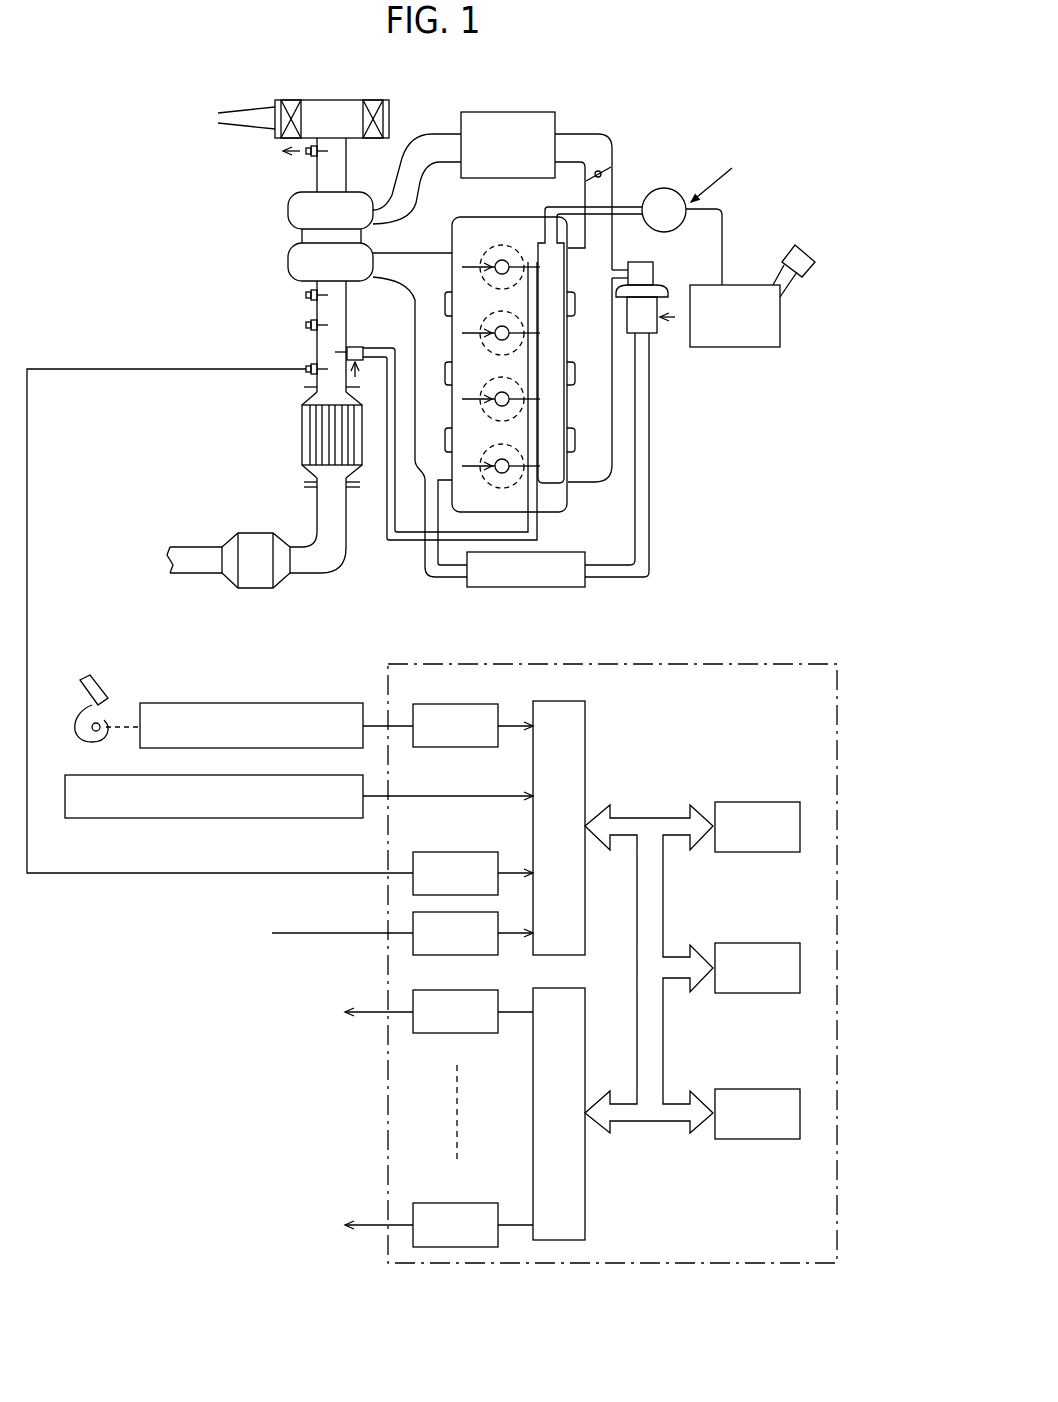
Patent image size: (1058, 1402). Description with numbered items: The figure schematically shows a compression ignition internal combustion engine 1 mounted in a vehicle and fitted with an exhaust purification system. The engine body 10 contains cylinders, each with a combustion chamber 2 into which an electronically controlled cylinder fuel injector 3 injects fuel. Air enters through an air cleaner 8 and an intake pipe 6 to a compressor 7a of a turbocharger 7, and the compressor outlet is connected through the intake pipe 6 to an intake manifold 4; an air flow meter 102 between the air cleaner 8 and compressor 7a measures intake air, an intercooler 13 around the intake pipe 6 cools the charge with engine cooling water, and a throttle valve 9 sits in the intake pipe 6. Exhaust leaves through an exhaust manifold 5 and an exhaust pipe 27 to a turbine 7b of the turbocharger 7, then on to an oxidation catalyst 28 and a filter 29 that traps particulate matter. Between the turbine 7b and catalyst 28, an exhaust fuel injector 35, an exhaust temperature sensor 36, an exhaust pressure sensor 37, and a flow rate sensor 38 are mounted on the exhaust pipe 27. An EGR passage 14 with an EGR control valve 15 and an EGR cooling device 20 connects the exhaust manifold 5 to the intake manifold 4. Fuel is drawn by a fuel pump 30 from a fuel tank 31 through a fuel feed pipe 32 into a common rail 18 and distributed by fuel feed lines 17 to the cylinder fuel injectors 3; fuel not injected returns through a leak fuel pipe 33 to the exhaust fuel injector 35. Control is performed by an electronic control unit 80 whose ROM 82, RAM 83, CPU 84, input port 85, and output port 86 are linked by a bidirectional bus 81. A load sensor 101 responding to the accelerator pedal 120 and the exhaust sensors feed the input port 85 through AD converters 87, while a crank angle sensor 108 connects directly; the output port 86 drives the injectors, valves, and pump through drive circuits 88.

The internal combustion engine 1 is at (714, 102).
The combustion chamber 2 is at (483, 247).
The cylinder fuel injector 3 is at (560, 329).
The intake manifold 4 is at (613, 463).
The exhaust manifold 5 is at (420, 464).
The intake pipe 6 is at (317, 186).
The turbocharger 7 is at (278, 229).
The compressor 7a is at (300, 206).
The turbine 7b is at (302, 264).
The air cleaner 8 is at (332, 105).
The throttle valve 9 is at (605, 170).
The engine body 10 is at (573, 498).
The intercooler 13 is at (507, 112).
The EGR passage 14 is at (650, 530).
The EGR control valve 15 is at (647, 262).
The fuel feed line 17 is at (508, 260).
The common rail 18 is at (548, 343).
The EGR cooling device 20 is at (587, 585).
The exhaust pipe 27 is at (317, 343).
The catalyst 28 is at (302, 443).
The filter 29 is at (243, 533).
The fuel pump 30 is at (682, 190).
The fuel tank 31 is at (747, 348).
The fuel feed pipe 32 is at (728, 210).
The leak fuel pipe 33 is at (533, 527).
The exhaust fuel injector 35 is at (355, 347).
The exhaust temperature sensor 36 is at (306, 373).
The exhaust pressure sensor 37 is at (306, 325).
The flow rate sensor 38 is at (306, 295).
The electronic control unit 80 is at (842, 741).
The bidirectional bus 81 is at (647, 817).
The ROM 82 is at (757, 802).
The RAM 83 is at (757, 943).
The CPU 84 is at (757, 1089).
The input port 85 is at (585, 723).
The output port 86 is at (585, 1208).
The AD converter 87 is at (463, 703).
The drive circuit 88 is at (412, 1022).
The load sensor 101 is at (298, 703).
The air flow meter 102 is at (306, 152).
The crank angle sensor 108 is at (277, 818).
The accelerator pedal 120 is at (103, 677).